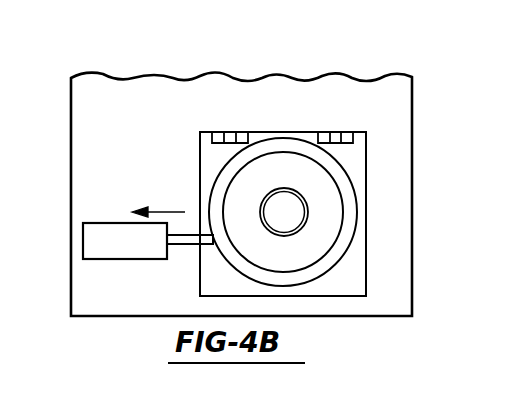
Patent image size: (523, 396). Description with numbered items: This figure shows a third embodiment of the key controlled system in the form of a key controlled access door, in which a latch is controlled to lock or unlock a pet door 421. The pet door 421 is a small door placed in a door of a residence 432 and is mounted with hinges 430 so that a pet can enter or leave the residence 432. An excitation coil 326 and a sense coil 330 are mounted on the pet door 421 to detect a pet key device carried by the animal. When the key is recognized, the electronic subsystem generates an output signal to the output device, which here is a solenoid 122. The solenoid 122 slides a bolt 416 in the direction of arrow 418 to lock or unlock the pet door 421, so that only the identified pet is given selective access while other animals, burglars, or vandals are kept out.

The residence 432 is at (71, 106).
The pet door 421 is at (200, 158).
The hinges 430 is at (325, 132).
The excitation coil 326 is at (275, 273).
The sense coil 330 is at (280, 237).
The solenoid 122 is at (128, 259).
The bolt 416 is at (190, 247).
The arrow 418 is at (178, 212).